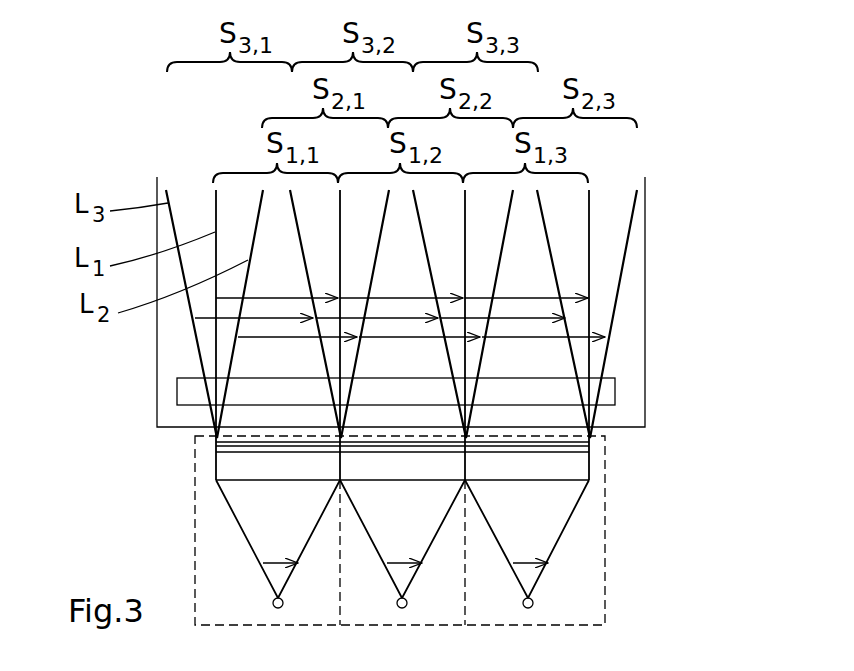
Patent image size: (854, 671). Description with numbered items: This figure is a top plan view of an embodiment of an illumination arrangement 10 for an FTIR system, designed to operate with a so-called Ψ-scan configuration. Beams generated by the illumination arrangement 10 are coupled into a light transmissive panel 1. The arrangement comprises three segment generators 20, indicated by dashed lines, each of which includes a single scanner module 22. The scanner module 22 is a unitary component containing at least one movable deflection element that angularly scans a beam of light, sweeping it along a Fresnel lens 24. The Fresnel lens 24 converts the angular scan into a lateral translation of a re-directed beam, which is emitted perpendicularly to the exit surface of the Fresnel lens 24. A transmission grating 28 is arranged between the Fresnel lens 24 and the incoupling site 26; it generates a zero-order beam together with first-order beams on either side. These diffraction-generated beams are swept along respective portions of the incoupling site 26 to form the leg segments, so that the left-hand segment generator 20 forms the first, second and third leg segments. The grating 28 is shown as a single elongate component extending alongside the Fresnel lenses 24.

The light transmissive panel 1 is at (648, 267).
The illumination arrangement 10 is at (117, 510).
The segment generator 20 is at (195, 556).
The scanner module 22 is at (284, 603).
The Fresnel lens 24 is at (230, 467).
The incoupling site 26 is at (607, 390).
The transmission grating 28 is at (592, 443).